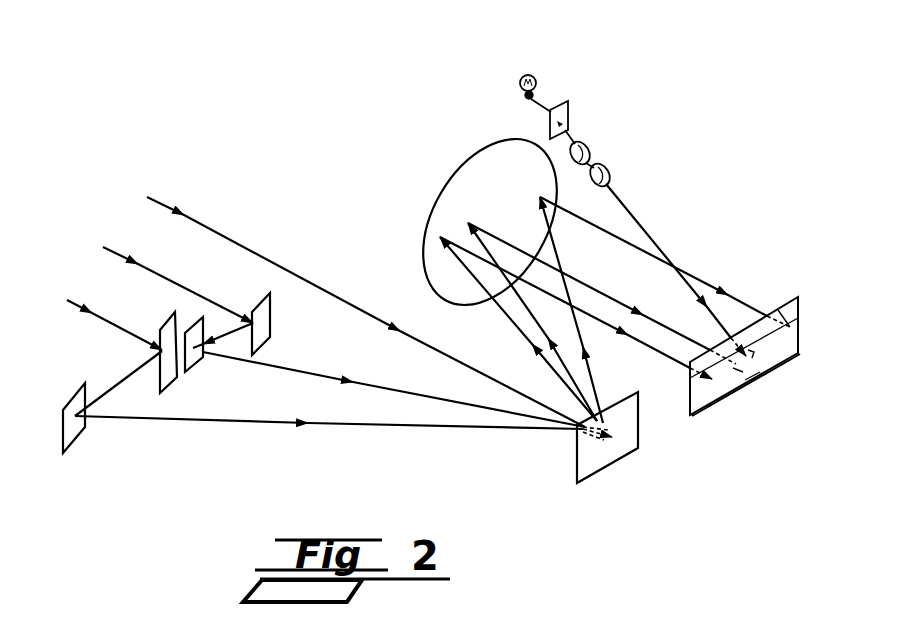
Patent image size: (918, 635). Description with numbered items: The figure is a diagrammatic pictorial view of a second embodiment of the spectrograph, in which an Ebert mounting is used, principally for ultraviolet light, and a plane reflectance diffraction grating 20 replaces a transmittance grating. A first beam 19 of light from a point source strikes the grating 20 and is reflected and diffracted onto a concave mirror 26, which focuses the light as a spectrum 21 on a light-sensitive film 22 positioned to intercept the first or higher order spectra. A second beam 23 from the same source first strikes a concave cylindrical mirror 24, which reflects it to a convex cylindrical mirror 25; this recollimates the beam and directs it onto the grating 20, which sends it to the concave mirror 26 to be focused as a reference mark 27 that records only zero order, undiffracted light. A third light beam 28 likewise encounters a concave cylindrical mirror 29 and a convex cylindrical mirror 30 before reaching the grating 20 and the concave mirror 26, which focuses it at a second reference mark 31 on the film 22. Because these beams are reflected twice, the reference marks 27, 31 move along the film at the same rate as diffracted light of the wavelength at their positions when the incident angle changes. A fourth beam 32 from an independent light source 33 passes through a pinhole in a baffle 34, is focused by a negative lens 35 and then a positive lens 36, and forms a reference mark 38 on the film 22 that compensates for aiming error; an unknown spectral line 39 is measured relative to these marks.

The first beam 19 is at (147, 196).
The plane reflectance diffraction grating 20 is at (607, 465).
The spectrum 21 is at (770, 352).
The light-sensitive film 22 is at (745, 381).
The second beam 23 is at (105, 246).
The concave cylindrical mirror 24 is at (270, 320).
The convex cylindrical mirror 25 is at (196, 360).
The concave mirror 26 is at (448, 181).
The reference mark 27 is at (705, 381).
The third light beam 28 is at (74, 300).
The concave cylindrical mirror 29 is at (172, 385).
The convex cylindrical mirror 30 is at (74, 445).
The second reference mark 31 is at (790, 326).
The fourth beam 32 is at (655, 232).
The independent light source 33 is at (537, 73).
The baffle 34 is at (573, 108).
The negative lens 35 is at (589, 146).
The positive lens 36 is at (609, 173).
The reference mark 38 is at (752, 355).
The unknown spectral line 39 is at (733, 369).